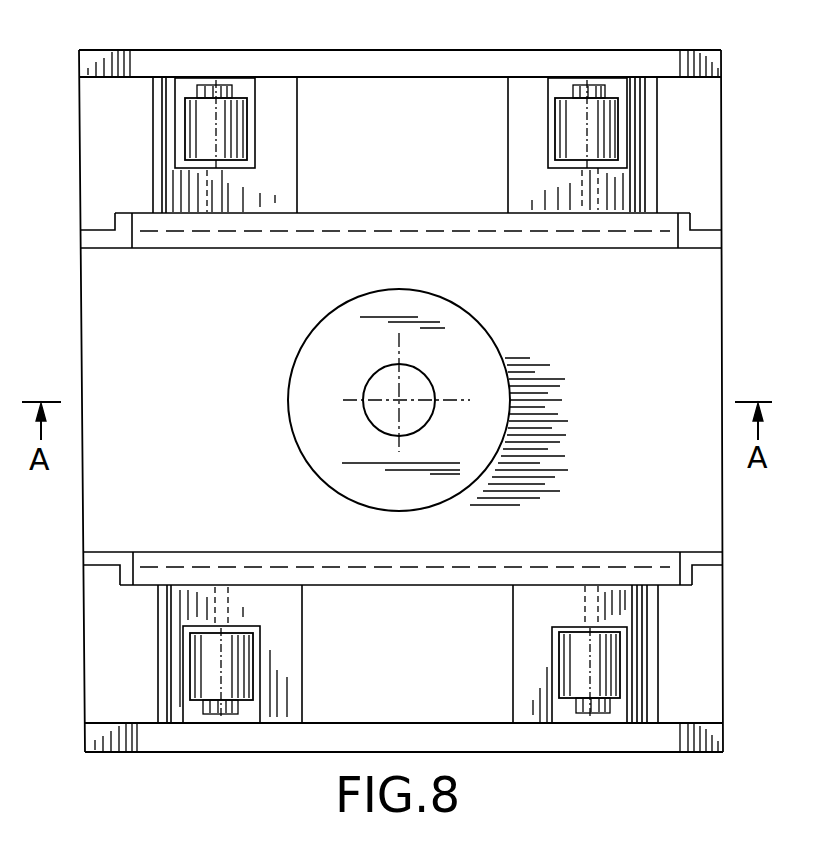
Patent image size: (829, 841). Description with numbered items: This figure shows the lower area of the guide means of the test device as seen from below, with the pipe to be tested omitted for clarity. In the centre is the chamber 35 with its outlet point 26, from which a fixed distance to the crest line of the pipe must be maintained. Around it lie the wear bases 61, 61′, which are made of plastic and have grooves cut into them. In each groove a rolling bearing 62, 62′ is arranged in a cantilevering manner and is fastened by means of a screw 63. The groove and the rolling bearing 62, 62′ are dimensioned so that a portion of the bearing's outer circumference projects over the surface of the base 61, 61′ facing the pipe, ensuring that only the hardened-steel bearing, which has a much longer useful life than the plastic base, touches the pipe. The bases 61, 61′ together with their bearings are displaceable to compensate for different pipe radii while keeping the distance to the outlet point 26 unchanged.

The outlet point 26 is at (399, 400).
The chamber 35 is at (482, 343).
The wear base 61 is at (173, 195).
The wear base 61′ is at (630, 192).
The rolling bearing 62 is at (192, 124).
The rolling bearing 62′ is at (607, 133).
The screw 63 is at (218, 88).